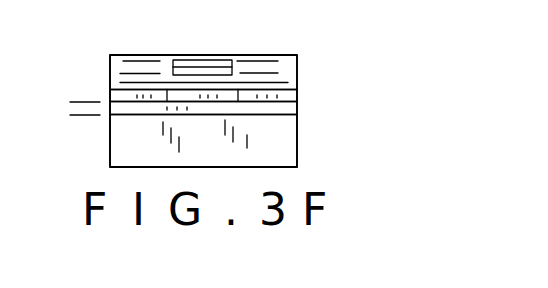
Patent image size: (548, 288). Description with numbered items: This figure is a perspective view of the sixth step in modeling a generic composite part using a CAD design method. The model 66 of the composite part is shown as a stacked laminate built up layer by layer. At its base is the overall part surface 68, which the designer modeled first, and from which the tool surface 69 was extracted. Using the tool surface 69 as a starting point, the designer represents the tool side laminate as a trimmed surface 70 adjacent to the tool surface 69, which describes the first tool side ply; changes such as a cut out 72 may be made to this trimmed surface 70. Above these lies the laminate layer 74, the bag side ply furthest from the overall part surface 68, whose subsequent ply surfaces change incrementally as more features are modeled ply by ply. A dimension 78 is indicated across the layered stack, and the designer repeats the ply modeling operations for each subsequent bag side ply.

The model 66 is at (92, 152).
The overall part surface 68 is at (299, 151).
The tool surface 69 is at (272, 114).
The trimmed surface 70 is at (297, 108).
The cut out 72 is at (198, 60).
The laminate layer 74 is at (297, 95).
The thickness dimension 78 is at (83, 125).